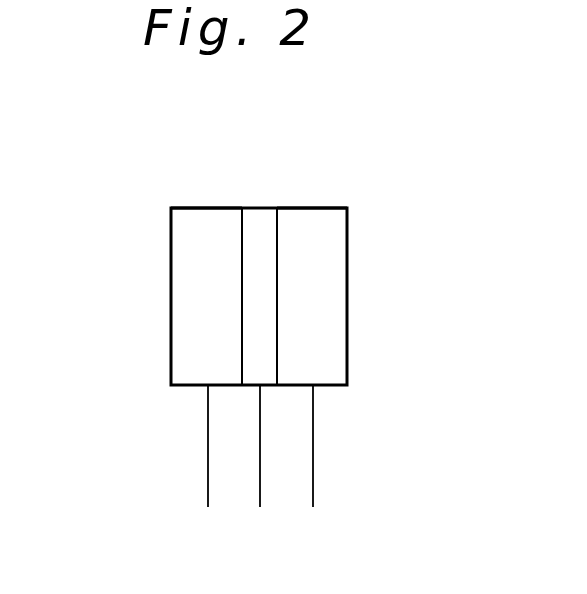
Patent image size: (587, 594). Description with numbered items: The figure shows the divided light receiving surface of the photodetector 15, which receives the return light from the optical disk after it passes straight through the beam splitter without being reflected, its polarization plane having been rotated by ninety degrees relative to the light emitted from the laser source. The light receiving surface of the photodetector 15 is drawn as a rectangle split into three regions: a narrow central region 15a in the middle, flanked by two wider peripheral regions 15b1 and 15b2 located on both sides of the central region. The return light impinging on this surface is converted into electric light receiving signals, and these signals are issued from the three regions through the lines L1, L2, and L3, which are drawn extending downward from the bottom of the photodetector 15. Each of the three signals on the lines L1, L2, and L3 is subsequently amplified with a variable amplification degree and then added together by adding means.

The photodetector 15 is at (347, 362).
The central region 15a is at (255, 220).
The peripheral region 15b1 is at (203, 215).
The peripheral region 15b2 is at (327, 217).
The line L1 is at (207, 505).
The line L2 is at (259, 505).
The line L3 is at (312, 505).